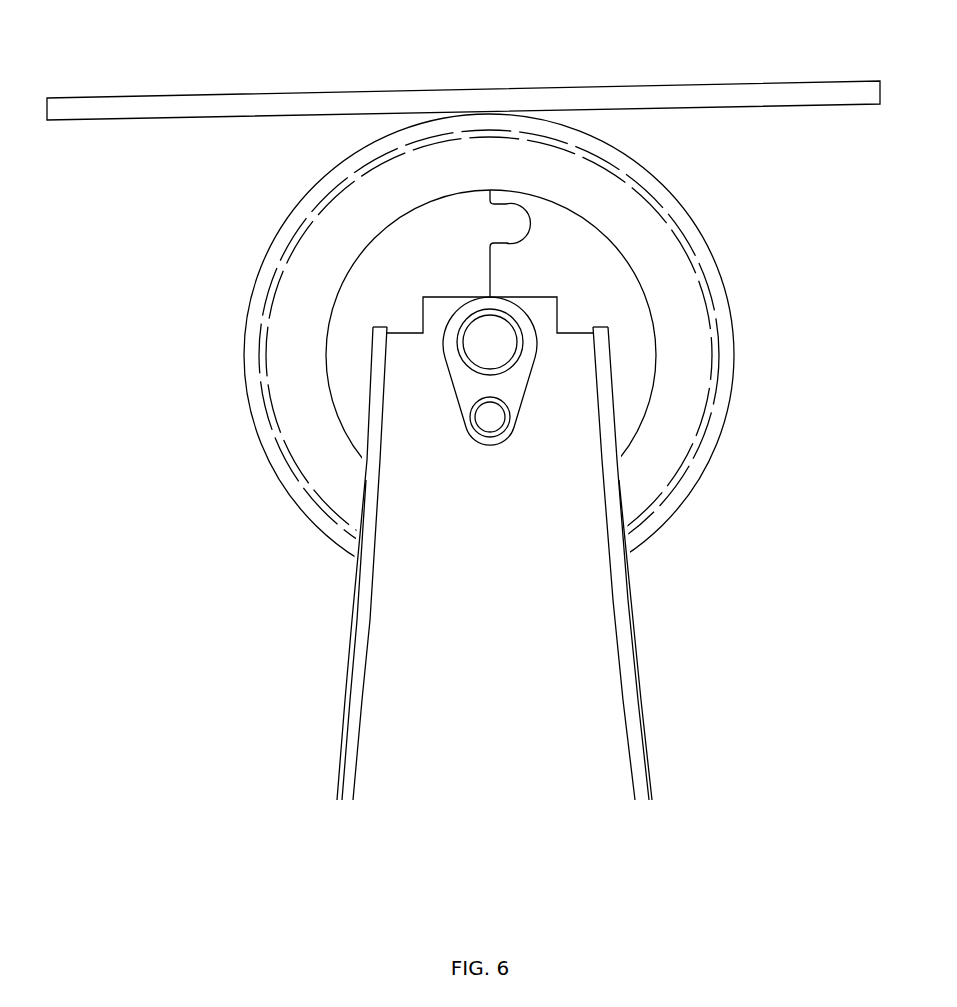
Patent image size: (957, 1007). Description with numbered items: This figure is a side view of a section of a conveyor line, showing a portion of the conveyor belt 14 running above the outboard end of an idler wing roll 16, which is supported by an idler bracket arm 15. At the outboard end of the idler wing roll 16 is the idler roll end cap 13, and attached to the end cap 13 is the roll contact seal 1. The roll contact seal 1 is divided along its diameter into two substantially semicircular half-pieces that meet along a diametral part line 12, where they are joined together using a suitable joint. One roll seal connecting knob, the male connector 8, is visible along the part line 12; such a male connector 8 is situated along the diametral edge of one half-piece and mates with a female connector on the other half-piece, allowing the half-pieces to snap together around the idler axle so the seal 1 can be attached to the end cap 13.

The roll contact seal 1 is at (350, 370).
The male connector 8 is at (507, 228).
The part line 12 is at (488, 272).
The end cap 13 is at (687, 405).
The conveyor belt 14 is at (677, 102).
The idler bracket arm 15 is at (537, 645).
The idler wing roll 16 is at (255, 219).